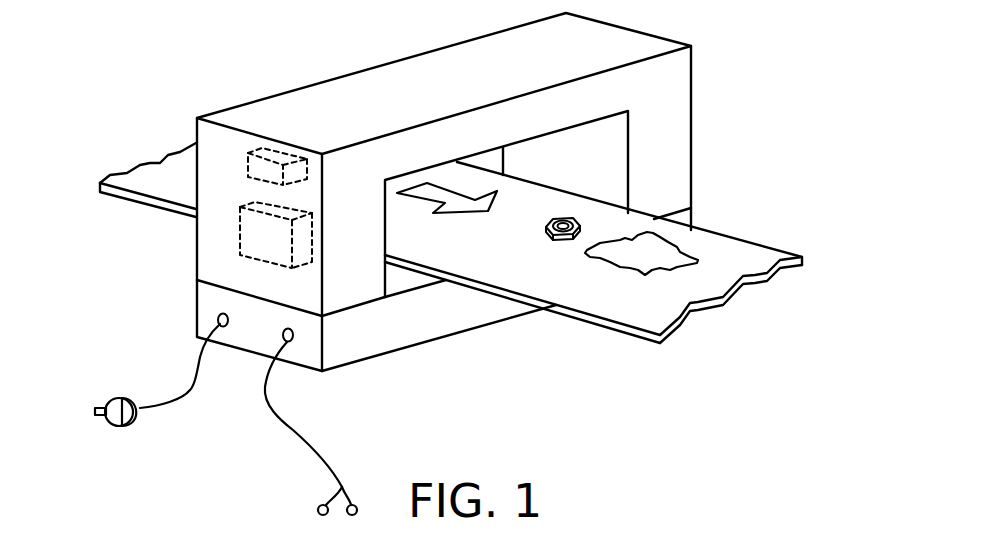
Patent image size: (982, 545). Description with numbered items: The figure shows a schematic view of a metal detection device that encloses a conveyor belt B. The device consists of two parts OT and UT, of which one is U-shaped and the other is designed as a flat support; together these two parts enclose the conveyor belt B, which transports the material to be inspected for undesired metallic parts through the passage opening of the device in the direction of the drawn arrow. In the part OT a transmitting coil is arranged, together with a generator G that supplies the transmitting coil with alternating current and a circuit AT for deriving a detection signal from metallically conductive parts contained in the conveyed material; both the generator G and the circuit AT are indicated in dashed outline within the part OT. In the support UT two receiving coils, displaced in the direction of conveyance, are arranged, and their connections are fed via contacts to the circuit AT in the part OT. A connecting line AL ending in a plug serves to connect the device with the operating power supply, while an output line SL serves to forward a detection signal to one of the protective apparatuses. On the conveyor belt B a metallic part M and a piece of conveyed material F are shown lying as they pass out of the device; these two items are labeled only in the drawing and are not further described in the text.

The upper part OT is at (445, 90).
The support UT is at (377, 338).
The generator G is at (249, 171).
The circuit AT is at (260, 241).
The connecting line AL is at (187, 383).
The output line SL is at (280, 407).
The conveyor belt B is at (623, 297).
The metal part M is at (555, 255).
The conveyed product F is at (652, 253).